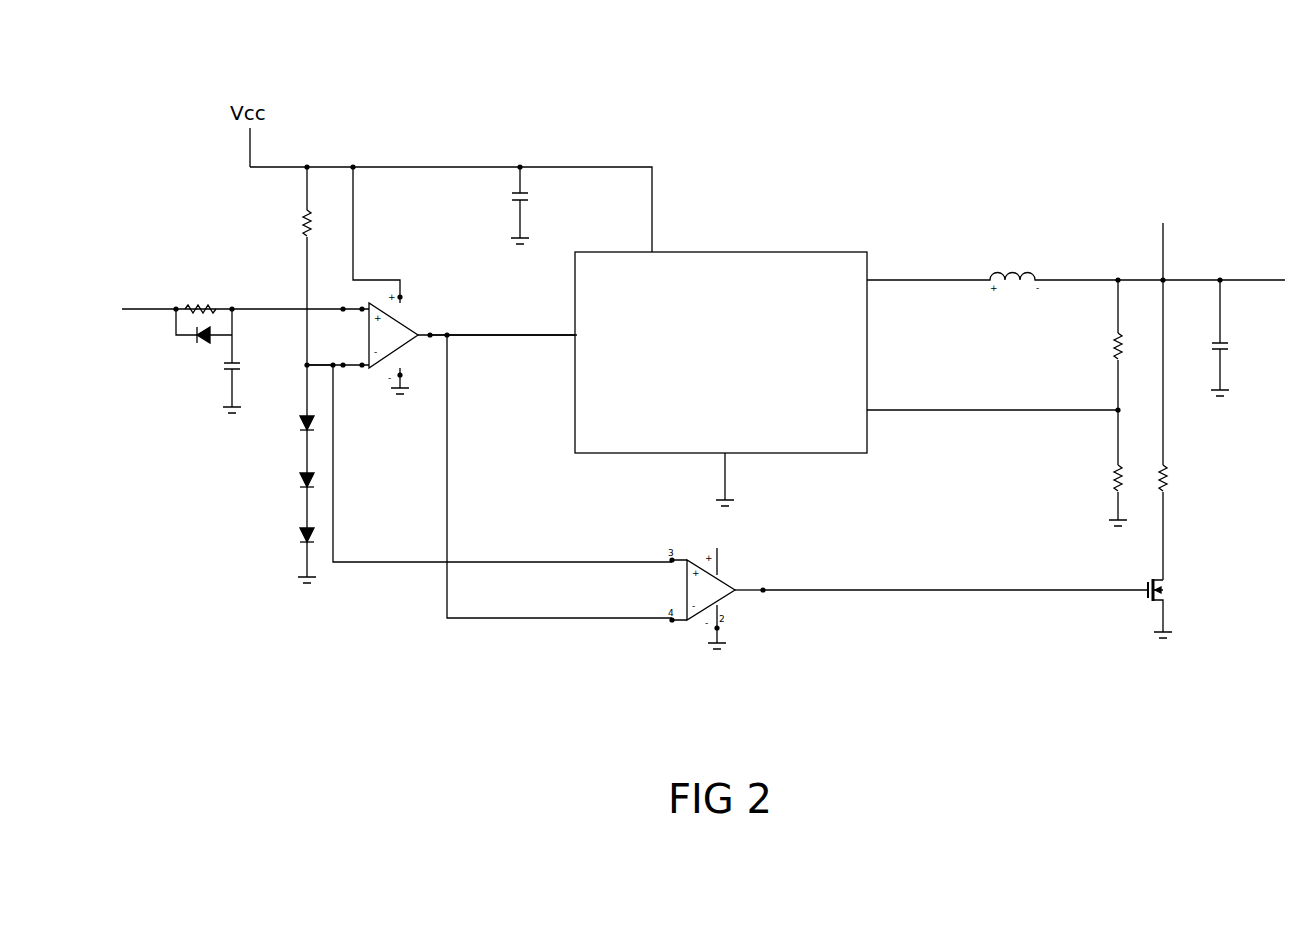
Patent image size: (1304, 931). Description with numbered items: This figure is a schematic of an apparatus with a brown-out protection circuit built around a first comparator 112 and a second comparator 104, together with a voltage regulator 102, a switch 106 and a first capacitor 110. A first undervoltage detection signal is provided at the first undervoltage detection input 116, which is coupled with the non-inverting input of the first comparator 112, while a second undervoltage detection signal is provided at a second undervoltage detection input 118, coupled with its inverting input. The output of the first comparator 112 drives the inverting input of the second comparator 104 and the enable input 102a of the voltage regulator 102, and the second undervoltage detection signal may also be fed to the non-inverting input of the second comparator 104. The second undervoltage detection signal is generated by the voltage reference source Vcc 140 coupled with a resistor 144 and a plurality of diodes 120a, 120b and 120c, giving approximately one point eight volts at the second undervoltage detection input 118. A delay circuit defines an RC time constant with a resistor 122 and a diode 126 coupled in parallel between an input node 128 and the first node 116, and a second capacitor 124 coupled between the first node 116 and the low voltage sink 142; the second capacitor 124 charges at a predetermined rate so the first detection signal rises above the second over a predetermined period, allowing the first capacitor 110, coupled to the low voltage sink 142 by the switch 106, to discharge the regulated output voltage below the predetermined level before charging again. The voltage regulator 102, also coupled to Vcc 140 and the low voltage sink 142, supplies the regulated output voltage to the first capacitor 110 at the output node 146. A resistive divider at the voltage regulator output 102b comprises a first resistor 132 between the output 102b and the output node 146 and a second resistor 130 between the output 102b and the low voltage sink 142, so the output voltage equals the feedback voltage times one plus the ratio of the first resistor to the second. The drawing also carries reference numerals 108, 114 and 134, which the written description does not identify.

The voltage regulator 102 is at (765, 247).
The enable input 102a is at (570, 340).
The voltage regulator output 102b is at (872, 418).
The second comparator 104 is at (728, 605).
The switch 106 is at (1142, 595).
The inductor output line 108 is at (1076, 277).
The first capacitor 110 is at (1238, 345).
The first comparator 112 is at (378, 372).
The amplifier output node 114 is at (450, 323).
The first undervoltage detection input 116 is at (232, 300).
The second undervoltage detection input 118 is at (297, 367).
The diode 120a is at (290, 425).
The diode 120b is at (290, 480).
The diode 120c is at (295, 545).
The resistor 122 is at (198, 300).
The second capacitor 124 is at (210, 370).
The diode 126 is at (195, 340).
The input node 128 is at (177, 313).
The second resistor 130 is at (1105, 475).
The first resistor 132 is at (1108, 342).
The resistor 134 is at (1172, 492).
The voltage reference source Vcc 140 is at (307, 160).
The low voltage sink 142 is at (217, 410).
The resistor 144 is at (295, 215).
The output node 146 is at (1157, 333).